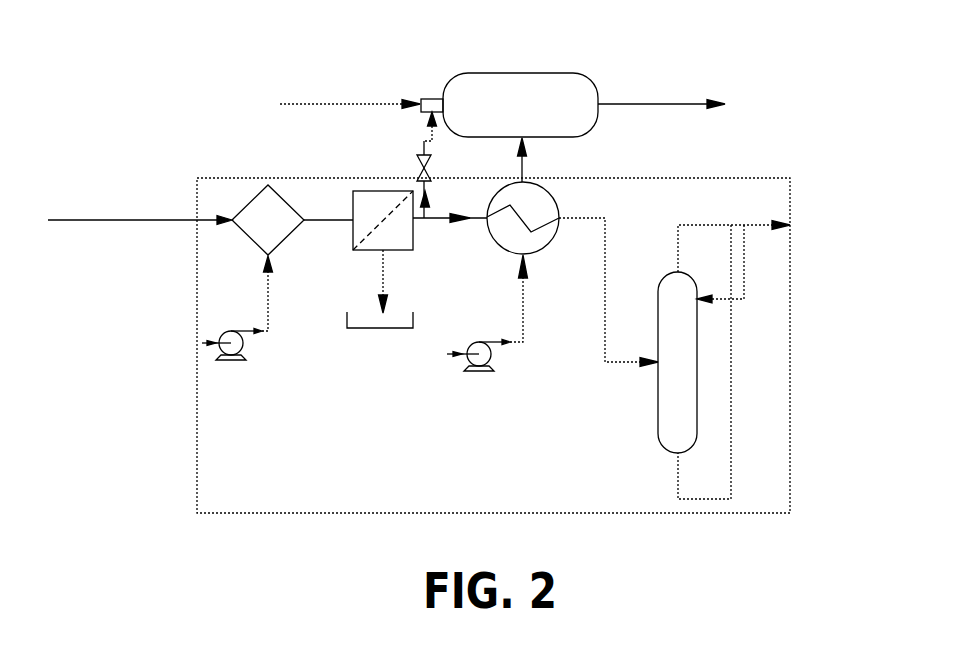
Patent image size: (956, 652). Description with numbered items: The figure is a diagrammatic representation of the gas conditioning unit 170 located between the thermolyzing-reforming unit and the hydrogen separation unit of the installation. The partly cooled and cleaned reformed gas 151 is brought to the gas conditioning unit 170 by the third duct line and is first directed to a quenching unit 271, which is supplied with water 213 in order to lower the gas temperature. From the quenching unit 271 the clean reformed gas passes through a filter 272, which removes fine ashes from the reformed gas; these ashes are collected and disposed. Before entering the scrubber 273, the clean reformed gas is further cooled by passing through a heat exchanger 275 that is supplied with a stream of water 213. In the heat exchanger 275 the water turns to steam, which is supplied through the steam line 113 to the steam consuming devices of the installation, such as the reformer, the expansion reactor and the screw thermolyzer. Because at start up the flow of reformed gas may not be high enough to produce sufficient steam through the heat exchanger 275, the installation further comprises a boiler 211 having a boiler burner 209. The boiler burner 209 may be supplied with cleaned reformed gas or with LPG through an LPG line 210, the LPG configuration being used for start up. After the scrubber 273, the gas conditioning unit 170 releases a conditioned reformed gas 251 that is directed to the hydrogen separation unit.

The steam line 113 is at (647, 104).
The partly cooled and cleaned reformed gas 151 is at (98, 220).
The gas conditioning unit 170 is at (790, 370).
The boiler burner 209 is at (432, 99).
The LPG line 210 is at (348, 104).
The boiler 211 is at (571, 137).
The water 213 is at (270, 292).
The conditioned reformed gas 251 is at (725, 225).
The quenching unit 271 is at (292, 220).
The filter 272 is at (405, 252).
The scrubber 273 is at (658, 405).
The heat exchanger 275 is at (556, 201).